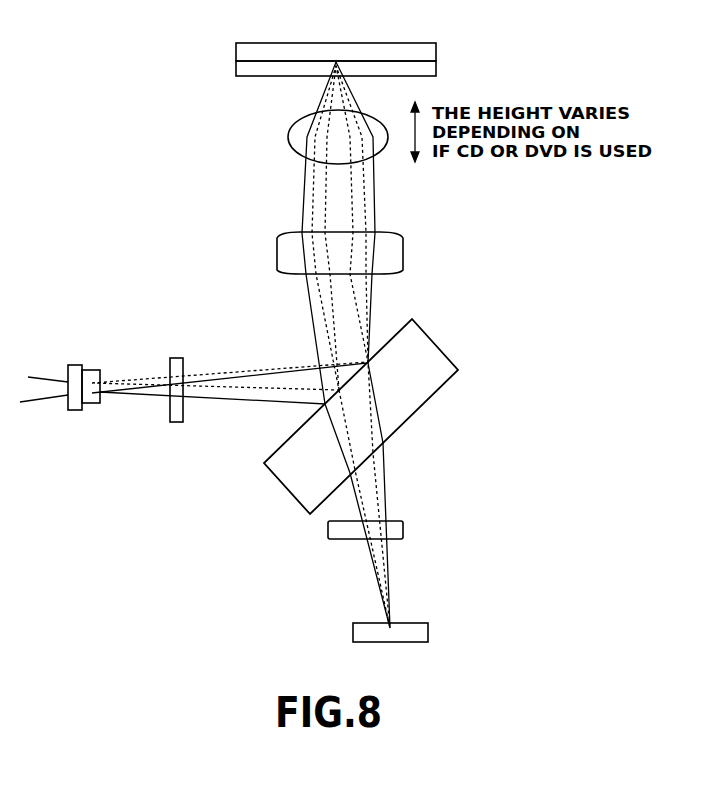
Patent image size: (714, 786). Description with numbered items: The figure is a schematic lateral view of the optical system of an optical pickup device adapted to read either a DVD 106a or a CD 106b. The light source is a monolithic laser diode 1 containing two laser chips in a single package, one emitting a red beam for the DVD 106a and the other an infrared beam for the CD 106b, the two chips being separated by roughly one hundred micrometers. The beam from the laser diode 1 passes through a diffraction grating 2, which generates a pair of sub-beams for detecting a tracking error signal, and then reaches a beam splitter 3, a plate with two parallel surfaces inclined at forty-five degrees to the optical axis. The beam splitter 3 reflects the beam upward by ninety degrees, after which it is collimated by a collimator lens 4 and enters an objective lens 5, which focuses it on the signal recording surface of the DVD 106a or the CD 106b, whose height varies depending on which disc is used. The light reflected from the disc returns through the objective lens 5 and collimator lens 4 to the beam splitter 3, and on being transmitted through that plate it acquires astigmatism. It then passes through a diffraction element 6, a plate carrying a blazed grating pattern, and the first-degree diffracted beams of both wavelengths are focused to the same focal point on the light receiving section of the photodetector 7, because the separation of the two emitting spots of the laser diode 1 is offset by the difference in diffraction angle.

The laser diode 1 is at (75, 365).
The diffraction grating 2 is at (177, 358).
The beam splitter 3 is at (420, 395).
The collimator lens 4 is at (277, 250).
The objective lens 5 is at (290, 131).
The diffraction element 6 is at (403, 530).
The photodetector 7 is at (428, 632).
The DVD 106a is at (252, 73).
The CD 106b is at (250, 48).